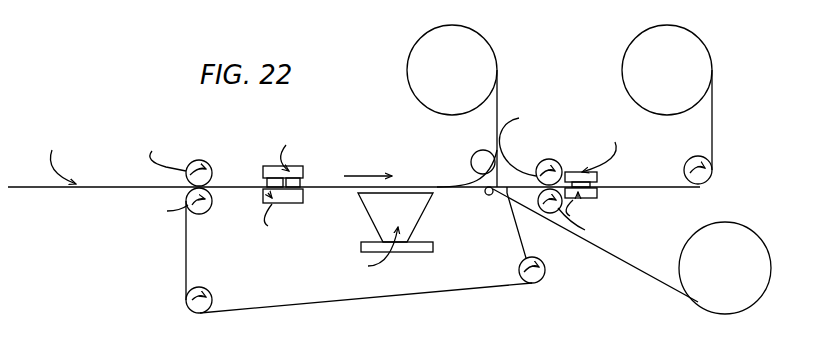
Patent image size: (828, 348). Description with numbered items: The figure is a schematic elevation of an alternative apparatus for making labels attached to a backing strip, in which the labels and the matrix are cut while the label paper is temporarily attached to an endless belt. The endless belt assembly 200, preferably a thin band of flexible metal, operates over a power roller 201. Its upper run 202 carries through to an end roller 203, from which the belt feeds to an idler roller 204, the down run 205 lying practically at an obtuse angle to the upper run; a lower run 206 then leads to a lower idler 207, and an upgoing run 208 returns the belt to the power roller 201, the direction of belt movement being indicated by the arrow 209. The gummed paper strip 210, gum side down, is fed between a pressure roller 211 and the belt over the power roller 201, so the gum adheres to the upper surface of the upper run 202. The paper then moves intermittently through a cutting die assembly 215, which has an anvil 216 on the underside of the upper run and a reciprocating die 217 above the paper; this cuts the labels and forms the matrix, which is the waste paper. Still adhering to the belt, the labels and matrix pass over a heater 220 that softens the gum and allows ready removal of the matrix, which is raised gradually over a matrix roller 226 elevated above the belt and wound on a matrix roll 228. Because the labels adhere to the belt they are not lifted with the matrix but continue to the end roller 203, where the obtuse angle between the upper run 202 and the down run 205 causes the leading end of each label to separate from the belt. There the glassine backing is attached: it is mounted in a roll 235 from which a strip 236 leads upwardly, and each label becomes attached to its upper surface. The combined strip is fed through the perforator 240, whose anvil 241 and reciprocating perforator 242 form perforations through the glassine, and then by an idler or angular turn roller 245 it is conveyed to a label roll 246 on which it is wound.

The endless belt assembly 200 is at (146, 263).
The power roller 201 is at (203, 214).
The upper run 202 is at (343, 190).
The end roller 203 is at (484, 194).
The idler roller 204 is at (519, 272).
The down run 205 is at (522, 244).
The lower run 206 is at (297, 306).
The lower idler 207 is at (212, 297).
The upgoing run 208 is at (186, 280).
The arrow 209 is at (427, 302).
The gummed paper strip 210 is at (103, 186).
The pressure roller 211 is at (207, 172).
The cutting die assembly 215 is at (309, 156).
The anvil 216 is at (288, 195).
The reciprocating die 217 is at (303, 178).
The heater 220 is at (400, 213).
The matrix roller 226 is at (479, 163).
The matrix roll 228 is at (428, 47).
The glassine roll 235 is at (736, 293).
The glassine strip 236 is at (626, 268).
The perforator 240 is at (541, 165).
The anvil 241 is at (598, 194).
The reciprocating perforator 242 is at (597, 177).
The idler or angular turn roller 245 is at (706, 177).
The label roll 246 is at (684, 82).